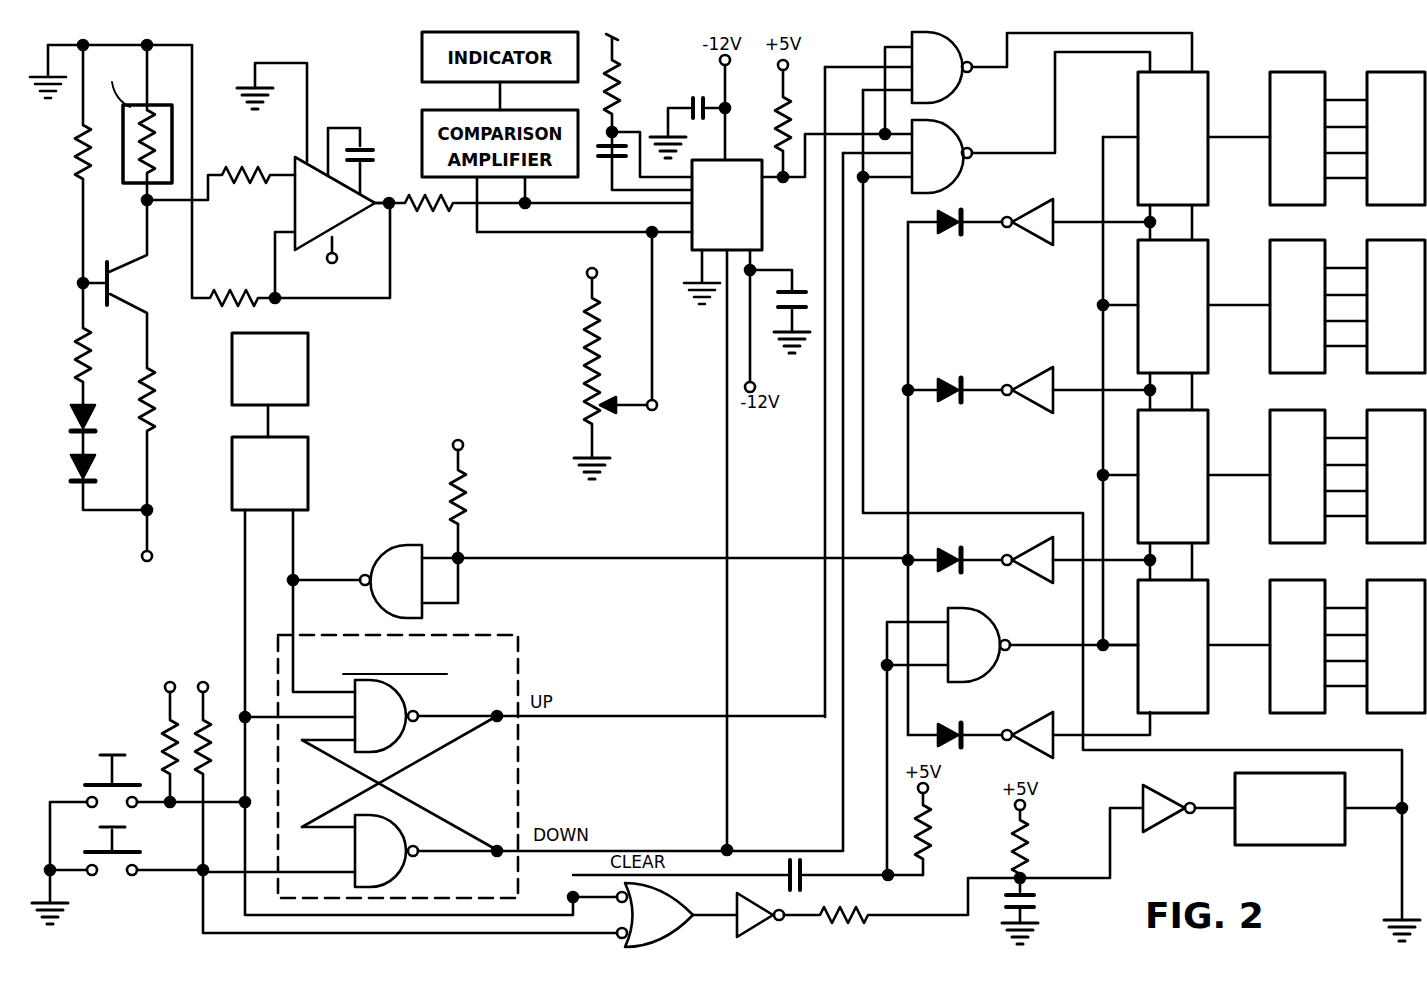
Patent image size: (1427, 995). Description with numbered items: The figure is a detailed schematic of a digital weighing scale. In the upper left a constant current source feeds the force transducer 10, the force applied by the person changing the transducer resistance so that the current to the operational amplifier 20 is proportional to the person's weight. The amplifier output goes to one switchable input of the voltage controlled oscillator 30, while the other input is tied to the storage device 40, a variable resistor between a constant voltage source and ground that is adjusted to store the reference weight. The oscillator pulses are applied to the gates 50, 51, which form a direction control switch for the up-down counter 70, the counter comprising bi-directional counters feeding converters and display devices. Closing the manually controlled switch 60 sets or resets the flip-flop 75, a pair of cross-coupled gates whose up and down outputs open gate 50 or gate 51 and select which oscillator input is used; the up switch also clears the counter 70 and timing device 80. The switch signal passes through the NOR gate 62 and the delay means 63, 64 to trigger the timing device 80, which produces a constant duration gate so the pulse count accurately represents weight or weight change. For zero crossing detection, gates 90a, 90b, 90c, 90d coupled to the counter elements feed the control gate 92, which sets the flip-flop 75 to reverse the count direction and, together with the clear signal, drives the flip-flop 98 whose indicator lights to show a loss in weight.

The force transducer 10 is at (114, 213).
The operational amplifier 20 is at (295, 203).
The voltage controlled oscillator 30 is at (748, 221).
The storage device 40 is at (592, 405).
The gate 50 is at (942, 92).
The gate 51 is at (945, 180).
The manually controlled switch 60 is at (124, 813).
The NOR gate 62 is at (668, 906).
The delay means 63 is at (760, 920).
The delay means 64 is at (1158, 815).
The up-down counter 70 is at (1212, 97).
The flip-flop 75 is at (508, 655).
The timing device 80 is at (1270, 835).
The zero crossing gate 90a is at (1030, 228).
The zero crossing gate 90b is at (1040, 382).
The zero crossing gate 90c is at (1032, 568).
The zero crossing gate 90d is at (1030, 728).
The control gate 92 is at (402, 553).
The flip-flop 98 is at (308, 470).